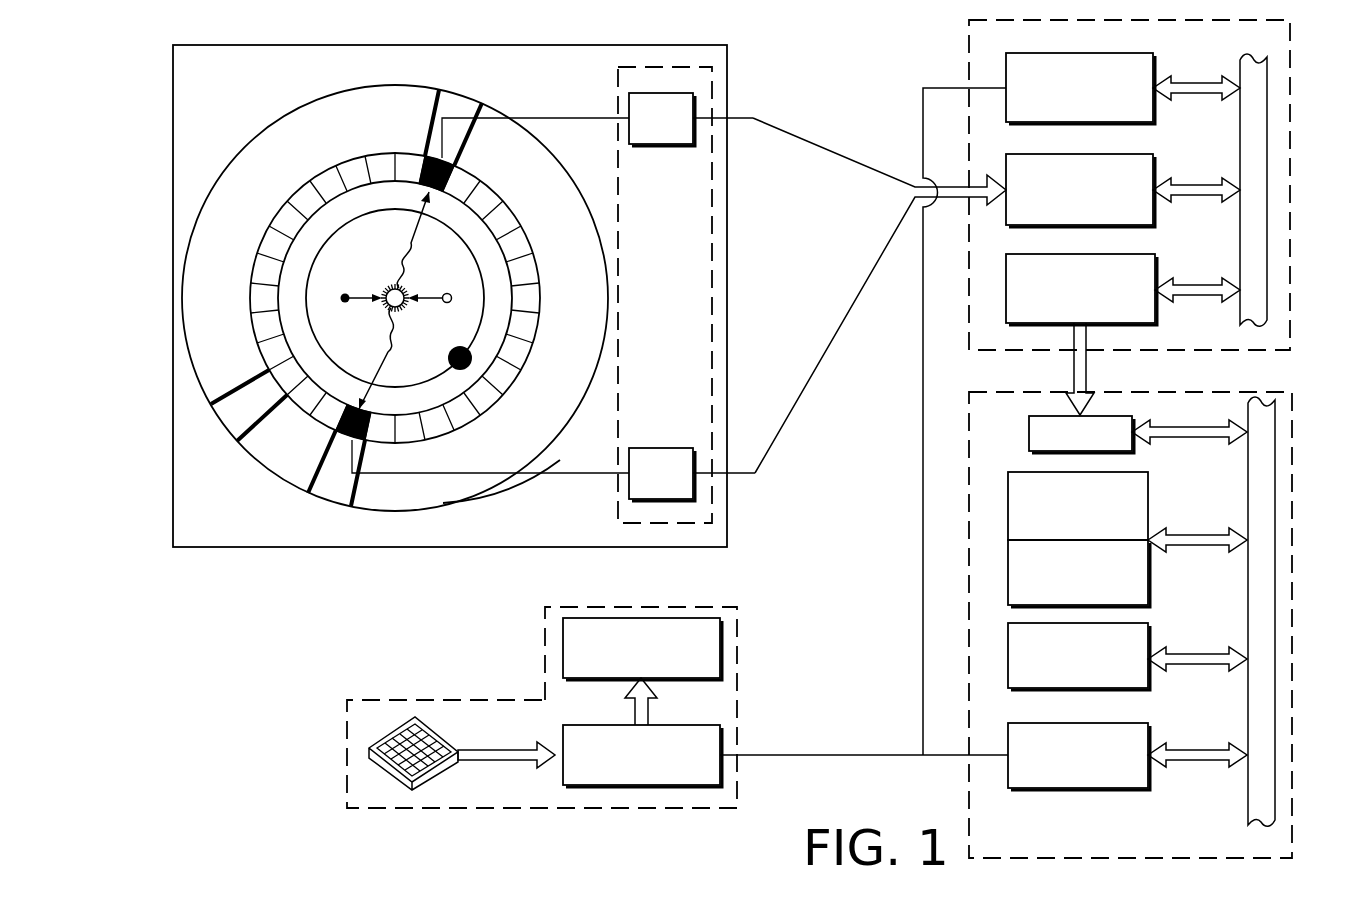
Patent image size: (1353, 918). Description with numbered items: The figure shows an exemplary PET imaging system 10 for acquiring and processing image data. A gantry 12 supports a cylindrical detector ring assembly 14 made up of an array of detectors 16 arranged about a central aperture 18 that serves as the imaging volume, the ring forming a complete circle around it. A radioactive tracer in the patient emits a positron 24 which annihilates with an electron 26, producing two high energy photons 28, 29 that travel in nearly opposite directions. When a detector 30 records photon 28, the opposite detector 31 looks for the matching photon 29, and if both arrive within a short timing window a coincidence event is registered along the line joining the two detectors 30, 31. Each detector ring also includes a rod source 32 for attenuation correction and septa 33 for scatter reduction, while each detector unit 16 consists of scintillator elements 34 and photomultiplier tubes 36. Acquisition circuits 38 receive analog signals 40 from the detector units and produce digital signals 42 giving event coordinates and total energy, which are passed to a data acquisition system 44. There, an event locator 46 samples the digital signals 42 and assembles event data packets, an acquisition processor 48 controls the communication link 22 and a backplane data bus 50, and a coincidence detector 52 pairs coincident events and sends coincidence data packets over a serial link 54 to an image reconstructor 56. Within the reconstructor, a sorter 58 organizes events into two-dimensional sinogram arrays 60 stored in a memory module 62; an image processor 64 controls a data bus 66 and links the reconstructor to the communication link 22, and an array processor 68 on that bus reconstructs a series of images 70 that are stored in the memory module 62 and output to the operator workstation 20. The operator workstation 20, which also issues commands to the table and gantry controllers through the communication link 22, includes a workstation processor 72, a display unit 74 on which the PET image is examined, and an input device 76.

The imaging system 10 is at (190, 732).
The gantry 12 is at (173, 191).
The detector ring assembly 14 is at (253, 112).
The detectors 16 is at (238, 413).
The central aperture 18 is at (381, 265).
The operator workstation 20 is at (437, 700).
The communication link 22 is at (923, 633).
The positron 24 is at (345, 303).
The electron 26 is at (447, 303).
The photon 28 is at (413, 250).
The photon 29 is at (383, 358).
The detector 30 is at (468, 100).
The detector 31 is at (332, 493).
The rod source 32 is at (472, 362).
The septa 33 is at (524, 307).
The scintillator elements 34 is at (271, 272).
The photomultiplier tubes 36 is at (443, 503).
The acquisition circuits 38 is at (676, 131).
The analog signals 40 is at (562, 118).
The digital signals 42 is at (815, 143).
The data acquisition system 44 is at (968, 72).
The event locator 46 is at (1153, 224).
The acquisition processor 48 is at (1153, 122).
The data bus 50 is at (1267, 235).
The coincidence detector 52 is at (1155, 322).
The serial link 54 is at (1086, 358).
The image reconstructor 56 is at (1292, 452).
The sorter 58 is at (1029, 440).
The sinogram array 60 is at (1148, 495).
The memory module 62 is at (995, 495).
The image processor 64 is at (1130, 789).
The data bus 66 is at (1275, 630).
The array processor 68 is at (1148, 678).
The images 70 is at (1148, 565).
The workstation processor 72 is at (720, 733).
The display unit 74 is at (720, 648).
The input device 76 is at (377, 768).